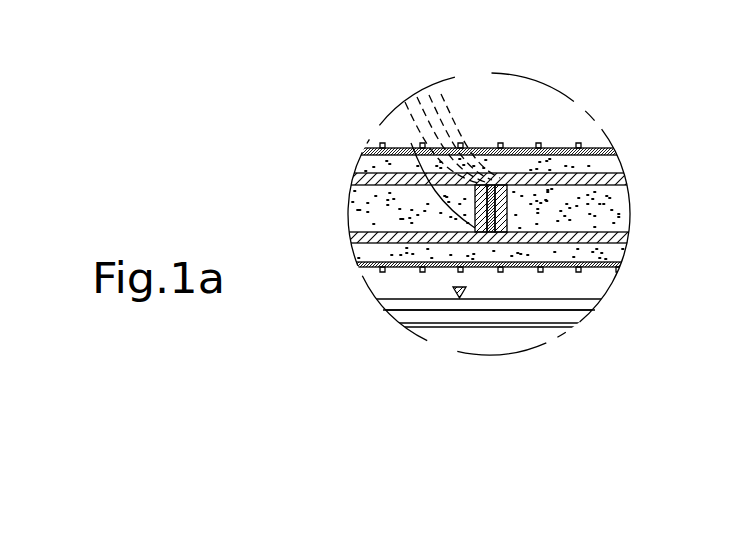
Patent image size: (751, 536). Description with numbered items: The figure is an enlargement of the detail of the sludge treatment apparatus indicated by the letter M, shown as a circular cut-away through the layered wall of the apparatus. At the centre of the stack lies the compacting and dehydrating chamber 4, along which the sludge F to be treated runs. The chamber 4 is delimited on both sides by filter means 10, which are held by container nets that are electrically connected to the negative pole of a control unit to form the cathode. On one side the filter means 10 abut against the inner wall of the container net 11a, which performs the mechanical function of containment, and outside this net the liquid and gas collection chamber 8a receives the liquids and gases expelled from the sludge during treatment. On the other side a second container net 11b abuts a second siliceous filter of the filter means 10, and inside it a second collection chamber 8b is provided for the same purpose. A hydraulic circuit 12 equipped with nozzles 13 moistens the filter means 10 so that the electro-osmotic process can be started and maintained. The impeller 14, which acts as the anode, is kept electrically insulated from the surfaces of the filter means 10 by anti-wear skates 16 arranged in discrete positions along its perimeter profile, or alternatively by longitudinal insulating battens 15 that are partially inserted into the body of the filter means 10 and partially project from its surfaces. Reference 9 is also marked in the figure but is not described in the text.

The detail M is at (343, 117).
The compacting and dehydrating chamber 4 is at (610, 200).
The sludge F is at (593, 217).
The liquid and gas collection chamber 8a is at (607, 340).
The second collection chamber 8b is at (477, 110).
The gap 9 is at (375, 289).
The filter means 10 is at (624, 252).
The container net 11a is at (648, 338).
The second container net 11b is at (588, 149).
The hydraulic circuit 12 is at (513, 307).
The nozzles 13 is at (452, 289).
The impeller 14 is at (432, 197).
The longitudinal insulating battens 15 is at (528, 181).
The anti-wear skates 16 is at (490, 186).